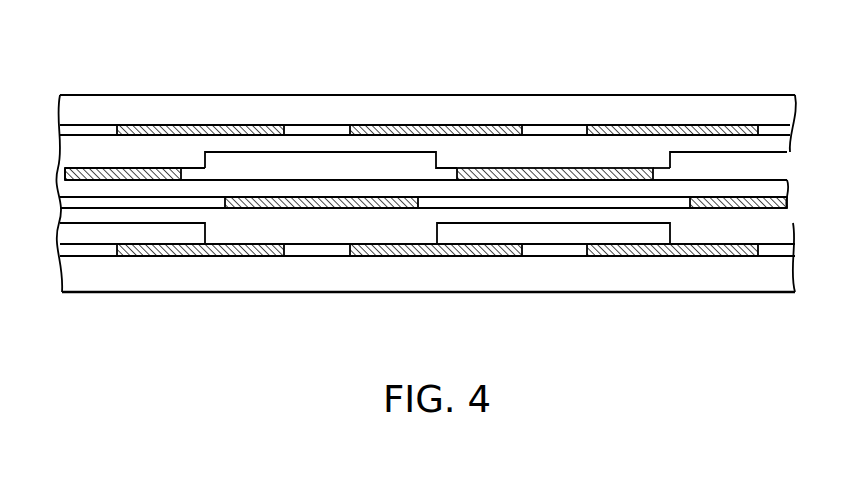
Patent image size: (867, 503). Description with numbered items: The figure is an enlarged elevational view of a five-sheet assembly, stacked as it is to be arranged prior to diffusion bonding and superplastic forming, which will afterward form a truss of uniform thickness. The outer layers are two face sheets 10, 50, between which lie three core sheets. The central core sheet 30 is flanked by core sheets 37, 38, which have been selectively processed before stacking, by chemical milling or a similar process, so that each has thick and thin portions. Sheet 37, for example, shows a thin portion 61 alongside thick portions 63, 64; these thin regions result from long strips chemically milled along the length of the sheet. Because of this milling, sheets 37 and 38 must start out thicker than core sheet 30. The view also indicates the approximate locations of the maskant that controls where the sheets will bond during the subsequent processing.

The face sheet 10 is at (112, 100).
The core sheet 37 is at (140, 157).
The thin portion 61 is at (245, 145).
The thick portion 63 is at (462, 155).
The thick portion 64 is at (637, 157).
The core sheet 30 is at (300, 190).
The core sheet 38 is at (230, 232).
The face sheet 50 is at (198, 276).